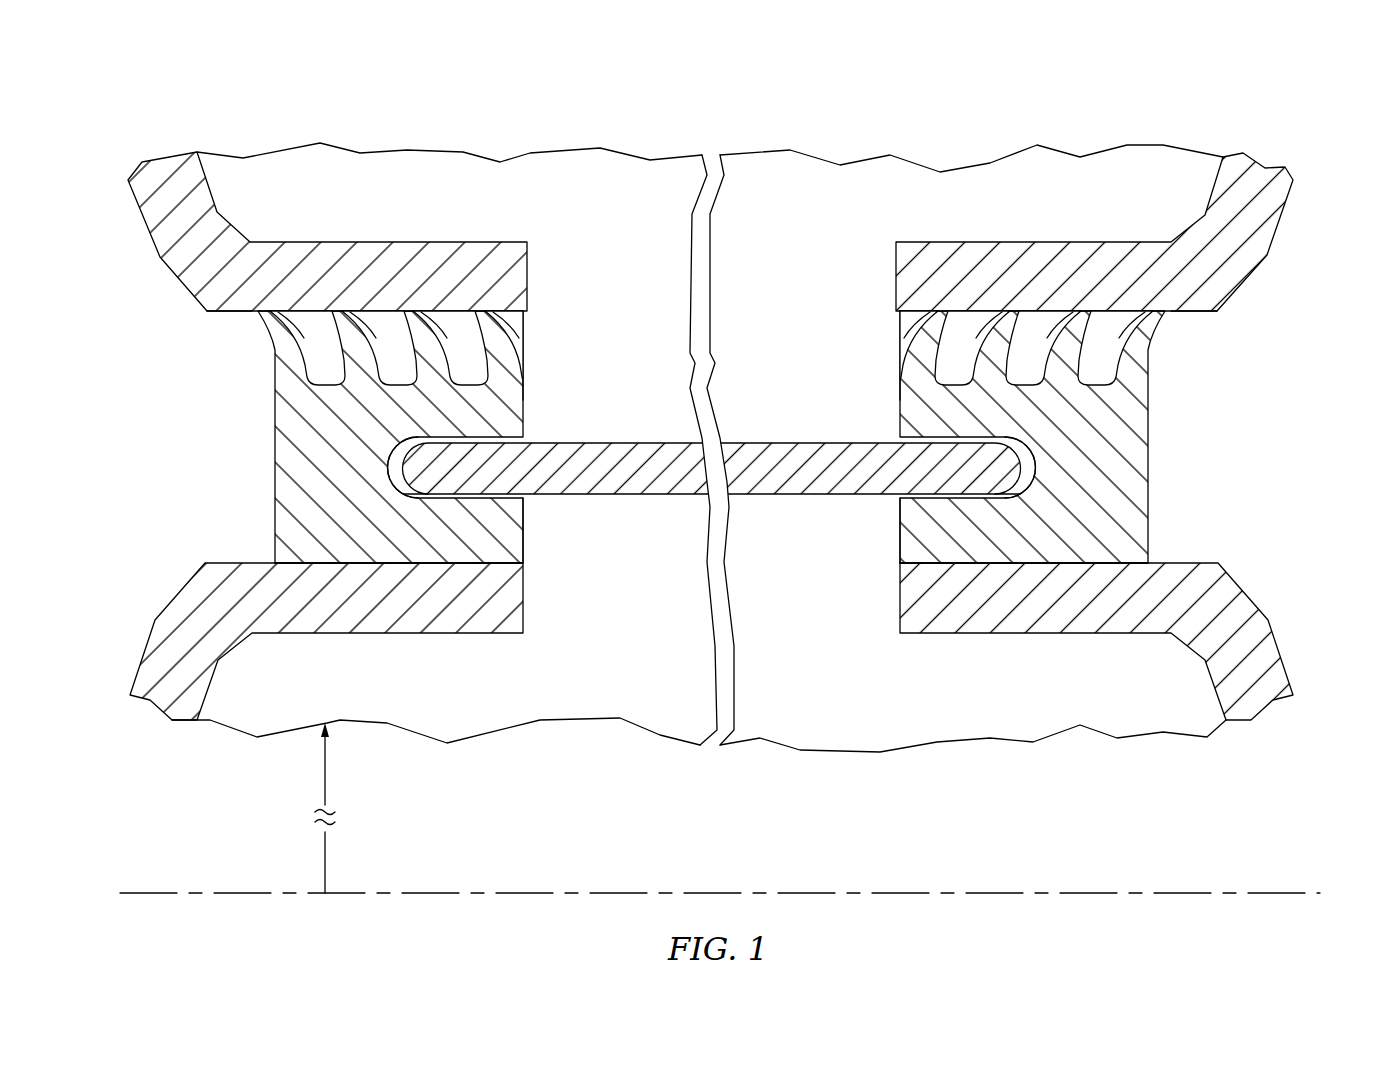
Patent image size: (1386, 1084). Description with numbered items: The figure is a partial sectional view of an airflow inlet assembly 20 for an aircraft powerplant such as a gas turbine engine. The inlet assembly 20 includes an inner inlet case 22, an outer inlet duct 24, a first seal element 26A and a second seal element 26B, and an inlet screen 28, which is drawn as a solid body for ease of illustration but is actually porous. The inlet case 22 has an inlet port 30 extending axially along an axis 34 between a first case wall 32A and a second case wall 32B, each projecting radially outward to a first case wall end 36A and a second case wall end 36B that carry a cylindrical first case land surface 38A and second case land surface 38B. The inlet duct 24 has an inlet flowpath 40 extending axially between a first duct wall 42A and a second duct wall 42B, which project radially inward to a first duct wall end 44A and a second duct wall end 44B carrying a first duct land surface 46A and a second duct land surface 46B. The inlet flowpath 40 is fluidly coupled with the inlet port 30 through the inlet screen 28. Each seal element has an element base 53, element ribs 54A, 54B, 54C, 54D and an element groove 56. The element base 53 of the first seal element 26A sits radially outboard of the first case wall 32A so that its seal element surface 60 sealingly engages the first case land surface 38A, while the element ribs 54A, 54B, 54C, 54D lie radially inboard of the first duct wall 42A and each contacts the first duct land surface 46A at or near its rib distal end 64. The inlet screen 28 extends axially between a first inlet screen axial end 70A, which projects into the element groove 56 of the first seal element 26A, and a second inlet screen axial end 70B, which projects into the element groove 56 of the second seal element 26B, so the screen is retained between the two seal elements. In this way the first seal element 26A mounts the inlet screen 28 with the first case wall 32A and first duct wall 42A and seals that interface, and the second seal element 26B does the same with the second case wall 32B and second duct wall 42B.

The airflow inlet assembly 20 is at (1262, 100).
The inner inlet case 22 is at (273, 657).
The outer inlet duct 24 is at (280, 197).
The first seal element 26A is at (245, 470).
The second seal element 26B is at (1180, 456).
The inlet screen 28 is at (785, 425).
The inlet port 30 is at (635, 679).
The first case wall 32A is at (293, 657).
The second case wall 32B is at (1132, 665).
The axis 34 is at (130, 893).
The first case wall end 36A is at (294, 624).
The second case wall end 36B is at (1129, 624).
The first case land surface 38A is at (222, 563).
The second case land surface 38B is at (1201, 563).
The inlet flowpath 40 is at (624, 214).
The first duct wall 42A is at (296, 197).
The second duct wall 42B is at (1137, 228).
The first duct wall end 44A is at (296, 248).
The second duct wall end 44B is at (1126, 249).
The first duct land surface 46A is at (222, 312).
The second duct land surface 46B is at (1201, 312).
The element base 53 is at (535, 540).
The first element rib 54A is at (300, 312).
The second element rib 54B is at (372, 312).
The third element rib 54C is at (445, 312).
The fourth element rib 54D is at (515, 317).
The element groove 56 is at (395, 505).
The seal element surface 60 is at (383, 567).
The rib distal end 64 is at (263, 311).
The first inlet screen axial end 70A is at (392, 470).
The second inlet screen axial end 70B is at (1031, 470).